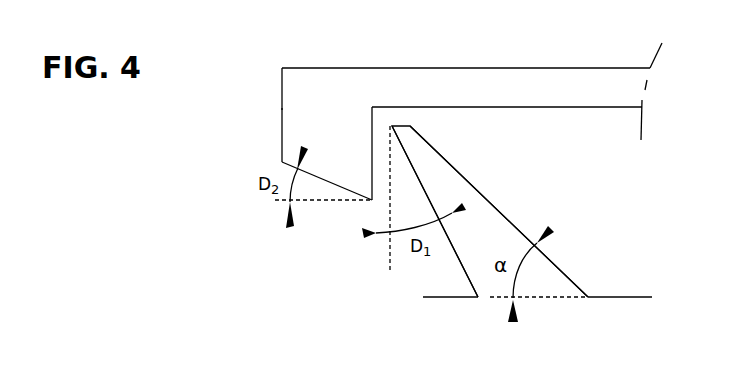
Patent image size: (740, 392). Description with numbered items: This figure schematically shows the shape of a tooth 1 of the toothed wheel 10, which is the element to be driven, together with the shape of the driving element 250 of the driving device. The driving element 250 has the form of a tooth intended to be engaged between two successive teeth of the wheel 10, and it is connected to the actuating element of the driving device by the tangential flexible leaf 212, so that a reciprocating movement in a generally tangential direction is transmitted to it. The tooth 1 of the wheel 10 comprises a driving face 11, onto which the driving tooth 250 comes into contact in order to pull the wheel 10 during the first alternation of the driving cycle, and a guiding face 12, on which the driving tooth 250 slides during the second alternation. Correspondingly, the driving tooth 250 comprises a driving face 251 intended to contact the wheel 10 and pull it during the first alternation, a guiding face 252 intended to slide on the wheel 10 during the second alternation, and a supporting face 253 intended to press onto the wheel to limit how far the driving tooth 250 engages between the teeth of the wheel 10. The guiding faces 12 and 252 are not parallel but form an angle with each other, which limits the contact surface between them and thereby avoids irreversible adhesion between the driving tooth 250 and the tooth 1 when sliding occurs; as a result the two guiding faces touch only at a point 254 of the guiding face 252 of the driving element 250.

The tooth 1 is at (445, 183).
The toothed wheel 10 is at (622, 312).
The driving face 11 is at (458, 260).
The guiding face 12 is at (503, 217).
The tangential flexible leaf 212 is at (503, 82).
The driving element 250 is at (295, 117).
The driving face 251 is at (377, 130).
The guiding face 252 is at (318, 178).
The supporting face 253 is at (445, 108).
The point 254 is at (282, 163).